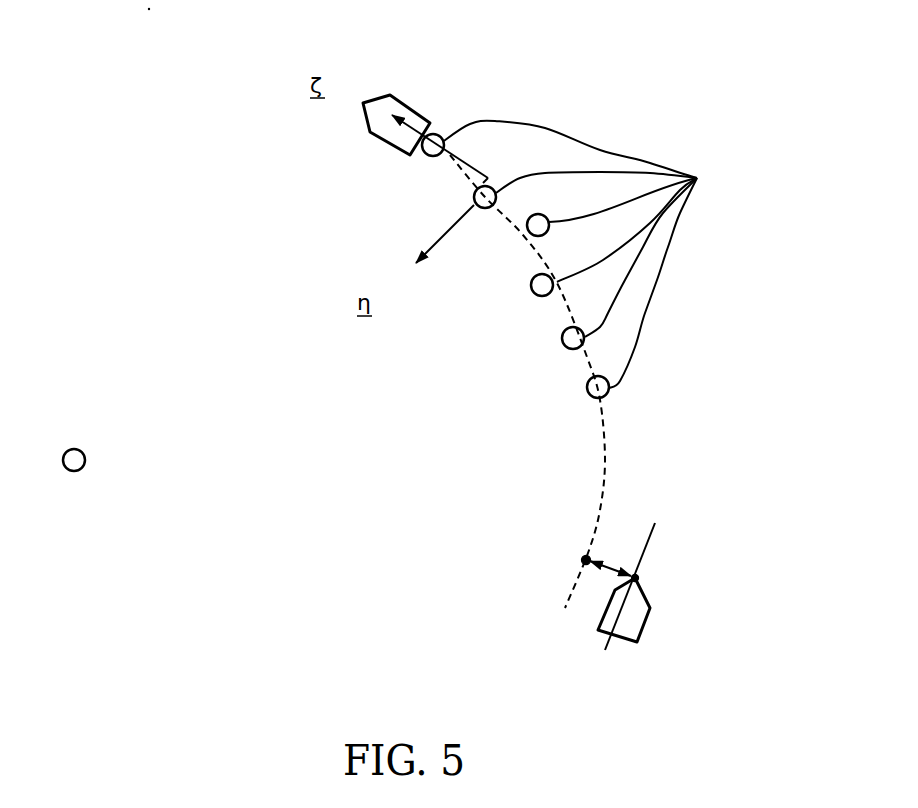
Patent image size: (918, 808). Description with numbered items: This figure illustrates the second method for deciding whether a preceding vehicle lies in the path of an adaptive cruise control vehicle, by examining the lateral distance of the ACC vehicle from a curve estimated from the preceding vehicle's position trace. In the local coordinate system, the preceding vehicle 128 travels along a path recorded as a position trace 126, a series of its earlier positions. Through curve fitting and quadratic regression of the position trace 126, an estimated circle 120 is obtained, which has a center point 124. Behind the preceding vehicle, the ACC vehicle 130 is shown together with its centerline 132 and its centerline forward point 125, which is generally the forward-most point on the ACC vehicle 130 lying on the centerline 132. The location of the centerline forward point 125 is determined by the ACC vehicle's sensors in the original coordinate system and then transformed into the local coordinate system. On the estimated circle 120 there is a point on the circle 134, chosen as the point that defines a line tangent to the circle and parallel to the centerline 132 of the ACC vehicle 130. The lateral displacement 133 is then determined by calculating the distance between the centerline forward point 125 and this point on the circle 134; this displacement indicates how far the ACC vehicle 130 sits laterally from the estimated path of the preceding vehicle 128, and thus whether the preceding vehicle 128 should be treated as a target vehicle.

The estimated circle 120 is at (605, 460).
The center point 124 is at (68, 470).
The centerline forward point 125 is at (636, 578).
The position trace 126 is at (697, 178).
The preceding vehicle 128 is at (407, 100).
The ACC vehicle 130 is at (651, 626).
The centerline 132 is at (652, 539).
The lateral displacement 133 is at (608, 568).
The point on the circle 134 is at (586, 560).